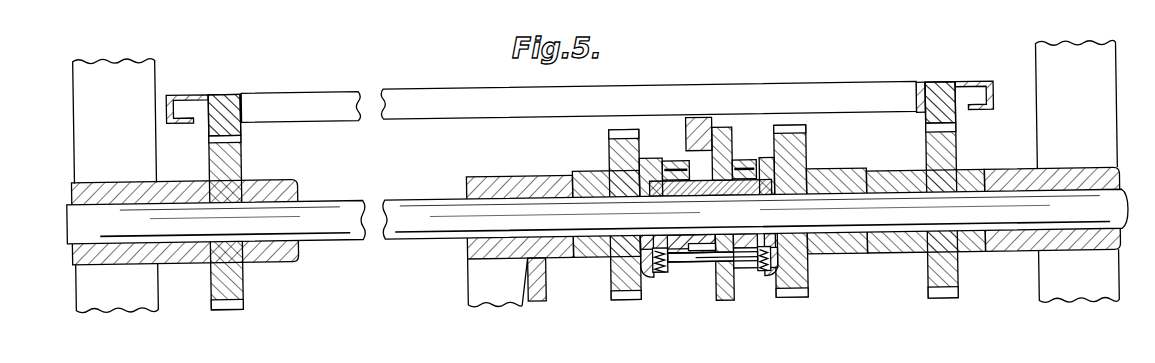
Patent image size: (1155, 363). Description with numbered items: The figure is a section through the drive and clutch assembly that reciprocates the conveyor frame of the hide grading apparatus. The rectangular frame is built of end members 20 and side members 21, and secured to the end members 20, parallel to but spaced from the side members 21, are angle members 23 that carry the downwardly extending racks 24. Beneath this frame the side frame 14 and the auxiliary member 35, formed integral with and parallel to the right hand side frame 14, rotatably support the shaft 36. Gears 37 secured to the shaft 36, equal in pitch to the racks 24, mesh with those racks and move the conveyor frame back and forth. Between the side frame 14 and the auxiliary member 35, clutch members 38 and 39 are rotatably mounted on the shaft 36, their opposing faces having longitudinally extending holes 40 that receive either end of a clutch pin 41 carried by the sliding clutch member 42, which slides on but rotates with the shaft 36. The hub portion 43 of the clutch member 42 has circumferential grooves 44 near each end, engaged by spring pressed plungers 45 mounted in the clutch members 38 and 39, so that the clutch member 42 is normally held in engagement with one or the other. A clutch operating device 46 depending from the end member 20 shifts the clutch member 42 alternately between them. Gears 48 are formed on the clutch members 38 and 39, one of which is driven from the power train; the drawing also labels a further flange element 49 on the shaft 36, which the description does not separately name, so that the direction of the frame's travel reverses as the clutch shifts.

The side frame 14 is at (1105, 136).
The end member 20 is at (562, 92).
The side member 21 is at (186, 89).
The angle member 23 is at (247, 91).
The rack 24 is at (228, 92).
The auxiliary member 35 is at (468, 286).
The shaft 36 is at (406, 201).
The gear 37 is at (238, 280).
The clutch member 38 is at (679, 262).
The clutch member 39 is at (760, 272).
The hole 40 is at (668, 164).
The clutch pin 41 is at (714, 270).
The clutch member 42 is at (743, 264).
The hub portion 43 is at (704, 181).
The circumferential groove 44 is at (765, 183).
The spring pressed plunger 45 is at (652, 262).
The clutch operating device 46 is at (697, 123).
The gear 48 is at (620, 301).
The right flange 49 is at (798, 300).